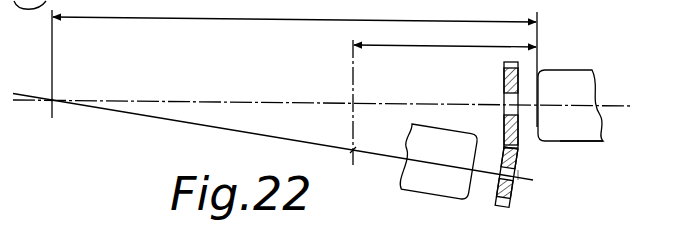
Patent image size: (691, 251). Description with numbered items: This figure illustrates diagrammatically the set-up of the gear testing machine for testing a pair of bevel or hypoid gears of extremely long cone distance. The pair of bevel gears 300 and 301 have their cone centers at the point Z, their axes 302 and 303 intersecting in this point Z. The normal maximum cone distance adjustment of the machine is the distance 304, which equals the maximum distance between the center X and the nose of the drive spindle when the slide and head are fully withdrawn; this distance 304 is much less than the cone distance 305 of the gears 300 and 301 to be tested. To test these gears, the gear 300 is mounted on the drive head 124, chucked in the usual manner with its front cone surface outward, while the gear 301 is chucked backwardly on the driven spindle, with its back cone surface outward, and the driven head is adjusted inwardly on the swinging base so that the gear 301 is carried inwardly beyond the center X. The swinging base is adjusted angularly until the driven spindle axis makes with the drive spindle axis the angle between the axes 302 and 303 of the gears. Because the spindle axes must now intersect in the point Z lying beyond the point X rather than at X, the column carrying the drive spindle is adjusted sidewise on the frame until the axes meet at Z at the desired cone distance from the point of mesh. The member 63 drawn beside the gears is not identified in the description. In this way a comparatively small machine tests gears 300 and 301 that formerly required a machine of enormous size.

The cone distance 305 is at (247, 5).
The normal maximum cone distance adjustment 304 is at (408, 28).
The bevel gear 300 is at (504, 67).
The bevel gear 301 is at (497, 207).
The axis 303 is at (522, 176).
The axis 302 is at (621, 88).
The drive head 124 is at (582, 134).
The member 63 is at (436, 189).
The cone center Z is at (57, 98).
The center X is at (355, 149).